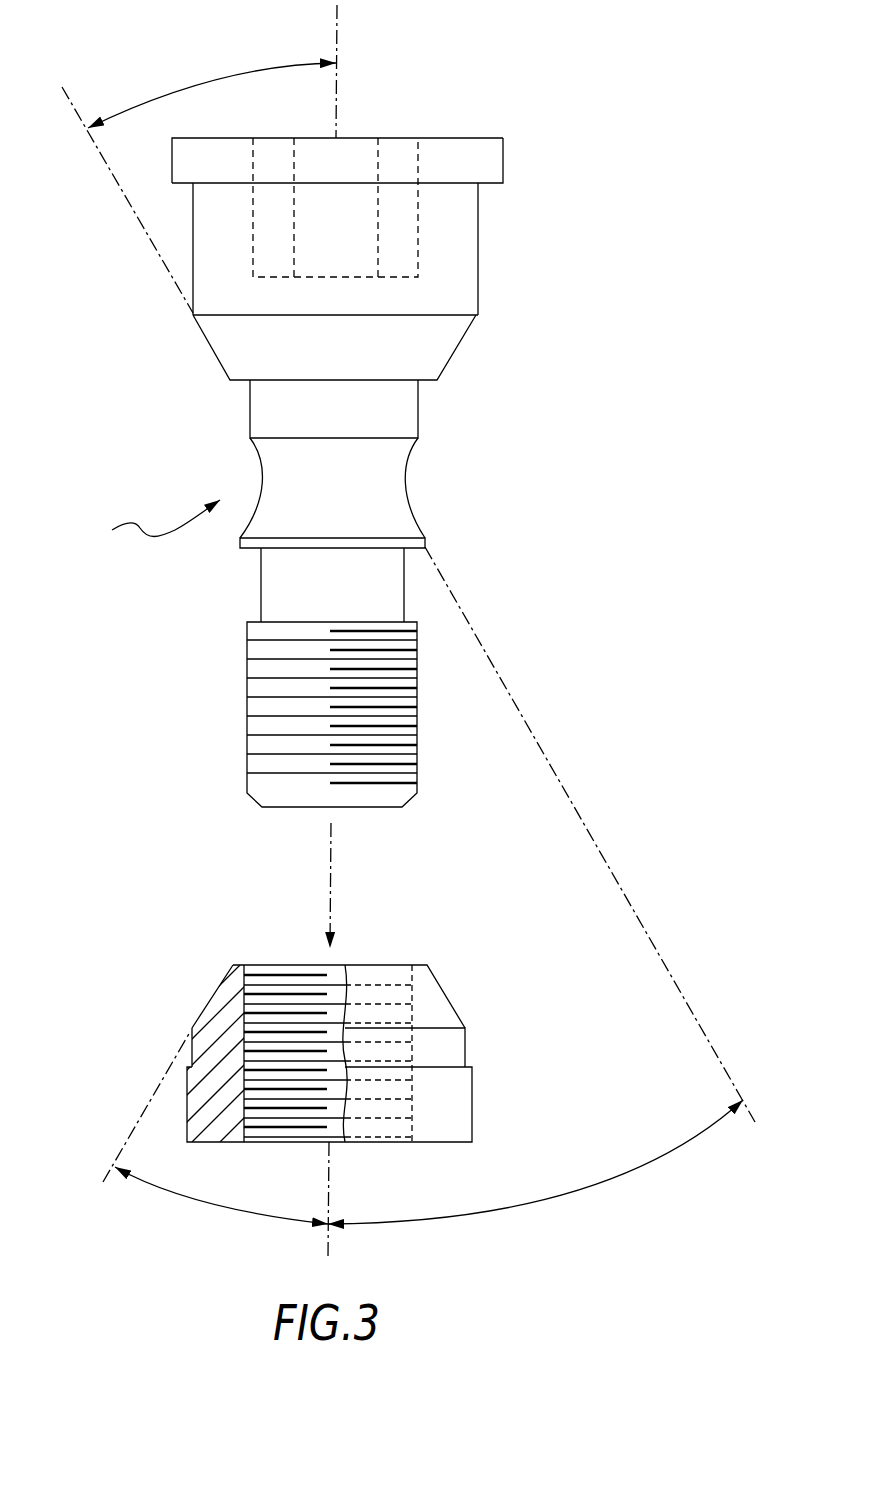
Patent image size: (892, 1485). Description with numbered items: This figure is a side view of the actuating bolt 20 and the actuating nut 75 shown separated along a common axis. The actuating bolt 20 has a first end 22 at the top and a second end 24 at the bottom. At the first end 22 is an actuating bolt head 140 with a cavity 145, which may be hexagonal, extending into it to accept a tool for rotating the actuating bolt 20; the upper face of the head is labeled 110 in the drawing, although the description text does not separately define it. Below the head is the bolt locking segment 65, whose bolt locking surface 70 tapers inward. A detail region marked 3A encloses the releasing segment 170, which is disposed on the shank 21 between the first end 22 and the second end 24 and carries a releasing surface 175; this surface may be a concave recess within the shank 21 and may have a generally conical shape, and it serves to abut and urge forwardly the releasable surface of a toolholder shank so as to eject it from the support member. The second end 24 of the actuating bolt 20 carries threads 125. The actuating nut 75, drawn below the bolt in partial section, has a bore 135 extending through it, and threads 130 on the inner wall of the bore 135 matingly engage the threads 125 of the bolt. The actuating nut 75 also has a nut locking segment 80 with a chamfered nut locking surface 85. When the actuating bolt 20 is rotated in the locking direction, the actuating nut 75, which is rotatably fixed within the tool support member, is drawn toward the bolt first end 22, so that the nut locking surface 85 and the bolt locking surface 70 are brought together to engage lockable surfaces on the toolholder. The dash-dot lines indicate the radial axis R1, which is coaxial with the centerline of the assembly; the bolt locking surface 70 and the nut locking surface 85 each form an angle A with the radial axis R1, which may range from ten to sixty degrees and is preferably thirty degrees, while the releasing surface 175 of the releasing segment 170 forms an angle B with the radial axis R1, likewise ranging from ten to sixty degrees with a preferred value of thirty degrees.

The actuating bolt 20 is at (139, 428).
The shank 21 is at (403, 408).
The first end 22 is at (467, 223).
The second end 24 is at (410, 768).
The bolt locking segment 65 is at (475, 277).
The bolt locking surface 70 is at (447, 332).
The actuating nut 75 is at (460, 1106).
The nut locking segment 80 is at (465, 1036).
The nut locking surface 85 is at (430, 986).
The head 110 is at (443, 143).
The threads 125 is at (415, 683).
The threads 130 is at (245, 987).
The bore 135 is at (310, 968).
The actuating bolt head 140 is at (498, 160).
The cavity 145 is at (352, 147).
The releasing segment 170 is at (405, 477).
The releasing surface 175 is at (422, 520).
The section view indicator 3A is at (153, 525).
The radial axis R1 is at (337, 37).
The angle A is at (199, 643).
The angle B is at (541, 885).